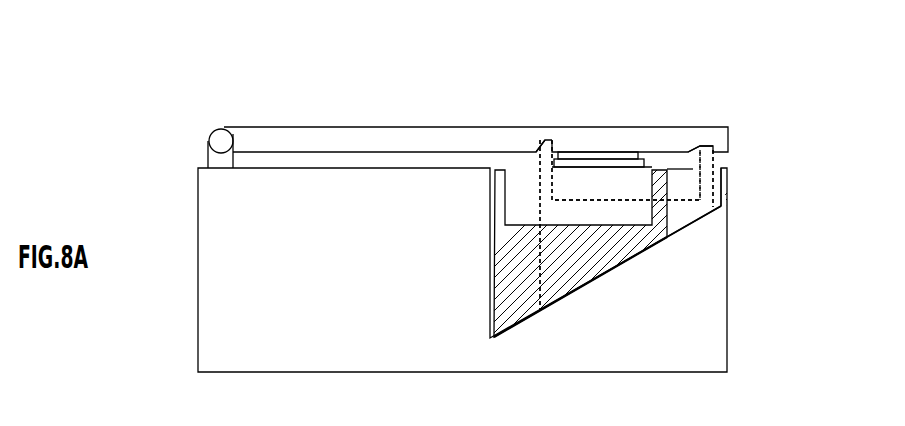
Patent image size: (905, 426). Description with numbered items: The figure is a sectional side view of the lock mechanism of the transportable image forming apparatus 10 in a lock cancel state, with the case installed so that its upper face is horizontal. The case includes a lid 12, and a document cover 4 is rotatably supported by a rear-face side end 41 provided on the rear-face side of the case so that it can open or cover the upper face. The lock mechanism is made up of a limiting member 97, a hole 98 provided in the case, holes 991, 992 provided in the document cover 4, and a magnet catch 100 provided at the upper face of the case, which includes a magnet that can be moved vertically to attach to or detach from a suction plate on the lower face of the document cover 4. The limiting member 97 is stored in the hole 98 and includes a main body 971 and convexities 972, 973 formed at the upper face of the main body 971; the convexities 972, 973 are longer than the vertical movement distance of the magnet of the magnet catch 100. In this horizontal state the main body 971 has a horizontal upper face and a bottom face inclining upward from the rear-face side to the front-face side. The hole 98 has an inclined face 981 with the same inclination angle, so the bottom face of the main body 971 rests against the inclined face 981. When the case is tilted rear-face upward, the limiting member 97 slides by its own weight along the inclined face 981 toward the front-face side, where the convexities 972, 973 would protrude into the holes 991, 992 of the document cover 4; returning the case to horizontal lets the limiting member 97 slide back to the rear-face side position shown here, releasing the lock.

The transportable image forming apparatus 10 is at (706, 50).
The lid 12 is at (228, 238).
The document cover 4 is at (267, 136).
The rear-face side end 41 is at (218, 142).
The limiting member 97 is at (628, 63).
The main body 971 is at (555, 148).
The convexity 972 is at (529, 252).
The convexity 973 is at (642, 158).
The hole 98 is at (699, 188).
The inclined face 981 is at (705, 233).
The hole 991 is at (545, 138).
The hole 992 is at (713, 142).
The magnet catch 100 is at (620, 158).